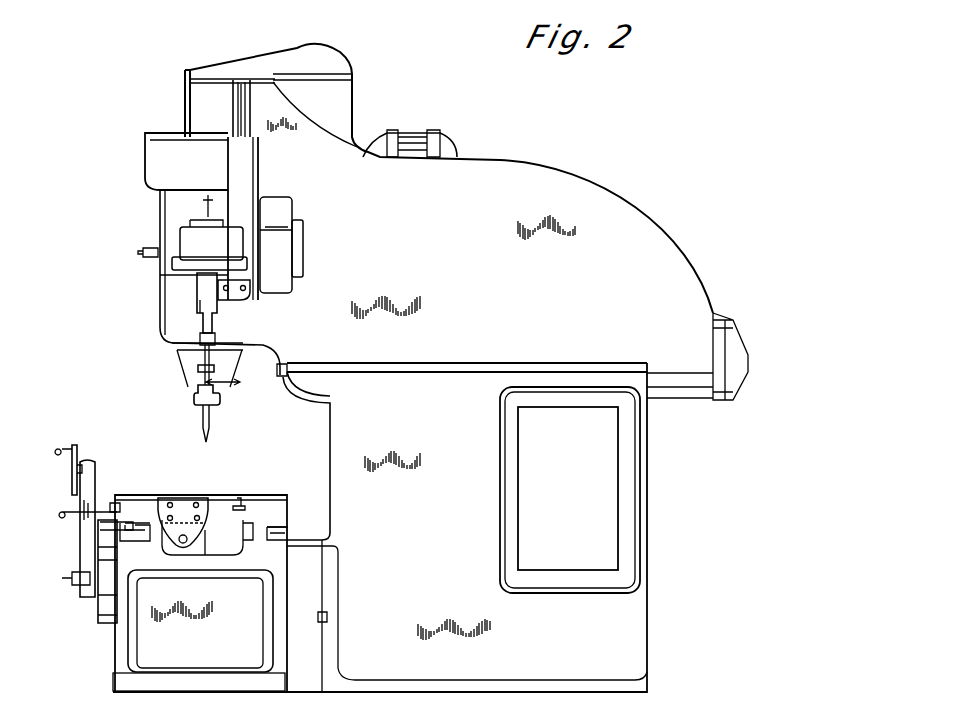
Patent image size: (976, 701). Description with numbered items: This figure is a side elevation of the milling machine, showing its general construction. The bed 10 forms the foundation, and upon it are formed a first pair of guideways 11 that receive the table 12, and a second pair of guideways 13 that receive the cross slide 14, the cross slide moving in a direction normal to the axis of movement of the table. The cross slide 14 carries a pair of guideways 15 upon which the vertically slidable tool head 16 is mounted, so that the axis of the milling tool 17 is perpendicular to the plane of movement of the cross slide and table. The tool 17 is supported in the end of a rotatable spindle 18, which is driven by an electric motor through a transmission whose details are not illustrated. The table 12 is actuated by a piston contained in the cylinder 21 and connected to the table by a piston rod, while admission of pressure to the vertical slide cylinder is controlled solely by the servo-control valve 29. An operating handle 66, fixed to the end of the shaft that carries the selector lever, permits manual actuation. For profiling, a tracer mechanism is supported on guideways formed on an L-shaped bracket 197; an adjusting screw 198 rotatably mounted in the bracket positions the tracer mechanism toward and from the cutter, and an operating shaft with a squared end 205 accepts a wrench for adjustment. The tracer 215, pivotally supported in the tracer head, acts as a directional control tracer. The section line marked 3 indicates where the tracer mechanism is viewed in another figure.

The bed 10 is at (640, 652).
The first pair of guideways 11 is at (273, 551).
The table 12 is at (268, 507).
The second pair of guideways 13 is at (503, 372).
The cross slide 14 is at (672, 230).
The pair of guideways 15 is at (252, 96).
The tool head 16 is at (145, 159).
The milling tool 17 is at (203, 428).
The spindle 18 is at (196, 394).
The cylinder 21 is at (200, 556).
The servo-control valve 29 is at (415, 132).
The operating handle 66 is at (95, 536).
The L-shaped bracket 197 is at (243, 198).
The adjusting screw 198 is at (220, 300).
The squared end 205 is at (240, 299).
The tracer 215 is at (200, 367).
The section line 3 is at (216, 294).